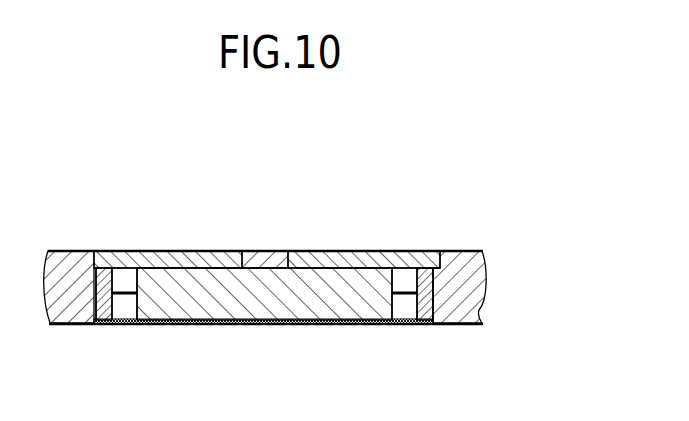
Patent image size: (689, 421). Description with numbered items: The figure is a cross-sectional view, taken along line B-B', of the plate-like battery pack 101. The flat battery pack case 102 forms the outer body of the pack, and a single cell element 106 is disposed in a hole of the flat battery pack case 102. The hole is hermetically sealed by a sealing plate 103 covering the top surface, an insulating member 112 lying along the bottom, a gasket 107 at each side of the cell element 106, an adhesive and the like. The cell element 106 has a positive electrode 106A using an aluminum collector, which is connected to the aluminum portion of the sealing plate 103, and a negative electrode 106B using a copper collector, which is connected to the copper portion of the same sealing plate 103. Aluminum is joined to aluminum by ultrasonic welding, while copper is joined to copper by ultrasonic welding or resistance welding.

The plate-like battery pack 101 is at (598, 154).
The flat battery pack case 102 is at (72, 249).
The sealing plate 103 is at (203, 250).
The single cell element 106 is at (248, 296).
The positive electrode 106A is at (124, 278).
The negative electrode 106B is at (405, 280).
The gasket 107 is at (100, 313).
The insulating member 112 is at (342, 326).